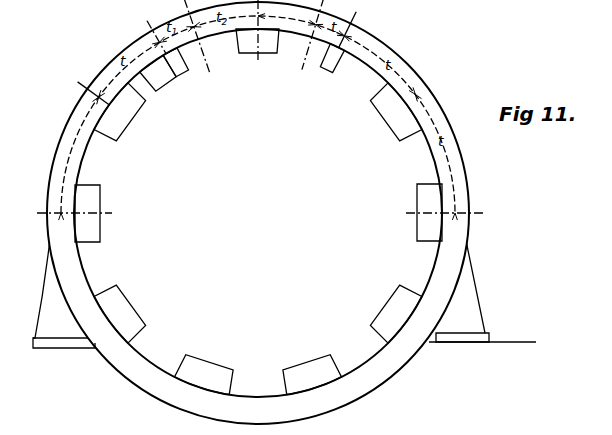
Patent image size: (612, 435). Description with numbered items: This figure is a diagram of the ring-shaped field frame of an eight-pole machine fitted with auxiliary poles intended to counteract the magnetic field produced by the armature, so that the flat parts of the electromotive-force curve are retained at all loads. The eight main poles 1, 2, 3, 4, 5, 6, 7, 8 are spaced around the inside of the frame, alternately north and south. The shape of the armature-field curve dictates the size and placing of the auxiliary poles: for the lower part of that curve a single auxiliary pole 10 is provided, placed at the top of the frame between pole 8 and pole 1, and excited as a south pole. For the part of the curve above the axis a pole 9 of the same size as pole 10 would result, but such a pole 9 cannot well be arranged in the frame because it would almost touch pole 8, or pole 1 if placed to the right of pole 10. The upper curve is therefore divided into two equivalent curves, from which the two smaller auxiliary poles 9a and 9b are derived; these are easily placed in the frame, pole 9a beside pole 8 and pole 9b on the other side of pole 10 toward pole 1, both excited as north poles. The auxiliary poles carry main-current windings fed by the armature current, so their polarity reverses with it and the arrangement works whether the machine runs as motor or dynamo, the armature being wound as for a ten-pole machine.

The pole 1 is at (435, 79).
The pole 2 is at (422, 212).
The pole 3 is at (396, 314).
The pole 4 is at (312, 372).
The pole 5 is at (204, 372).
The pole 6 is at (120, 314).
The pole 7 is at (94, 213).
The pole 8 is at (120, 112).
The auxiliary pole 9 is at (158, 80).
The auxiliary pole 9a is at (183, 72).
The auxiliary pole 9b is at (329, 68).
The auxiliary pole 10 is at (257, 50).